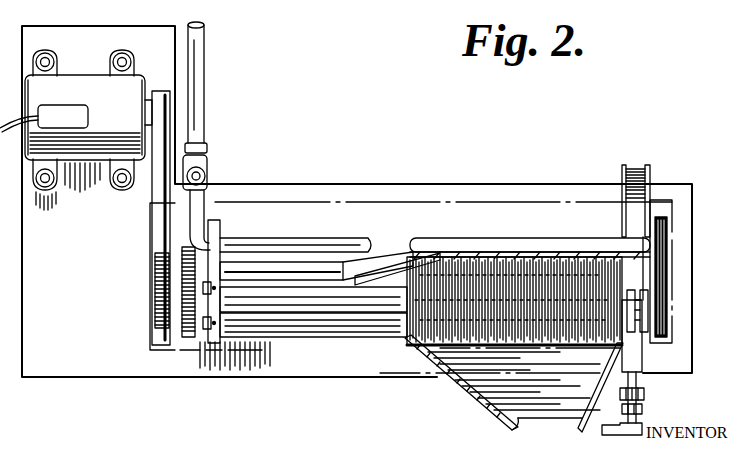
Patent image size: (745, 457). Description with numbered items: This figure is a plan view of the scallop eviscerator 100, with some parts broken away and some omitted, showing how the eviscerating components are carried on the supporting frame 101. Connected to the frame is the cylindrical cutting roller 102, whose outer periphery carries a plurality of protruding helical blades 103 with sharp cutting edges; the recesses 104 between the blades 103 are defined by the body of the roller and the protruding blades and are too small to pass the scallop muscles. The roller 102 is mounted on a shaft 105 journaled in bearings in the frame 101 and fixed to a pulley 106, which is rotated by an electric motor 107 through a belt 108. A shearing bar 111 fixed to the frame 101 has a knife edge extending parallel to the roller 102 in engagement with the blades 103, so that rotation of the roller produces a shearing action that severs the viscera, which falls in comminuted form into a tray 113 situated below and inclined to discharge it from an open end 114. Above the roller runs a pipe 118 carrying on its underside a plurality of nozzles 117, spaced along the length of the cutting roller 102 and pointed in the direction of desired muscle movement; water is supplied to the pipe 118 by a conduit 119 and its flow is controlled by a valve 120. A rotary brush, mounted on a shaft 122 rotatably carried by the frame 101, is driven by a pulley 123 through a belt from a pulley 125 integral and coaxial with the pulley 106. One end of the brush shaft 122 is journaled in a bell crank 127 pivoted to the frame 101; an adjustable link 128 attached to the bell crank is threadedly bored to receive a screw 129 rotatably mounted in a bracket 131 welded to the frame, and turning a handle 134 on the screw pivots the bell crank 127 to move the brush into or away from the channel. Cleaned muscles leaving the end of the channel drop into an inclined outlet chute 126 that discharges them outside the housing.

The scallop eviscerator 100 is at (251, 104).
The supporting frame 101 is at (62, 378).
The cutting roller 102 is at (340, 262).
The helical blades 103 is at (395, 251).
The recesses 104 is at (372, 258).
The shaft 105 is at (280, 265).
The pulley 106 is at (155, 320).
The electric motor 107 is at (87, 80).
The belt 108 is at (158, 190).
The shearing bar 111 is at (300, 330).
The tray 113 is at (545, 393).
The open end 114 is at (530, 420).
The nozzles 117 is at (506, 244).
The pipe 118 is at (230, 244).
The conduit 119 is at (204, 60).
The valve 120 is at (209, 164).
The shaft 122 is at (265, 316).
The pulley 123 is at (183, 323).
The pulley 125 is at (167, 249).
The outlet chute 126 is at (622, 220).
The bell crank 127 is at (632, 290).
The adjustable link 128 is at (640, 362).
The screw 129 is at (644, 390).
The bracket 131 is at (644, 407).
The handle 134 is at (618, 420).